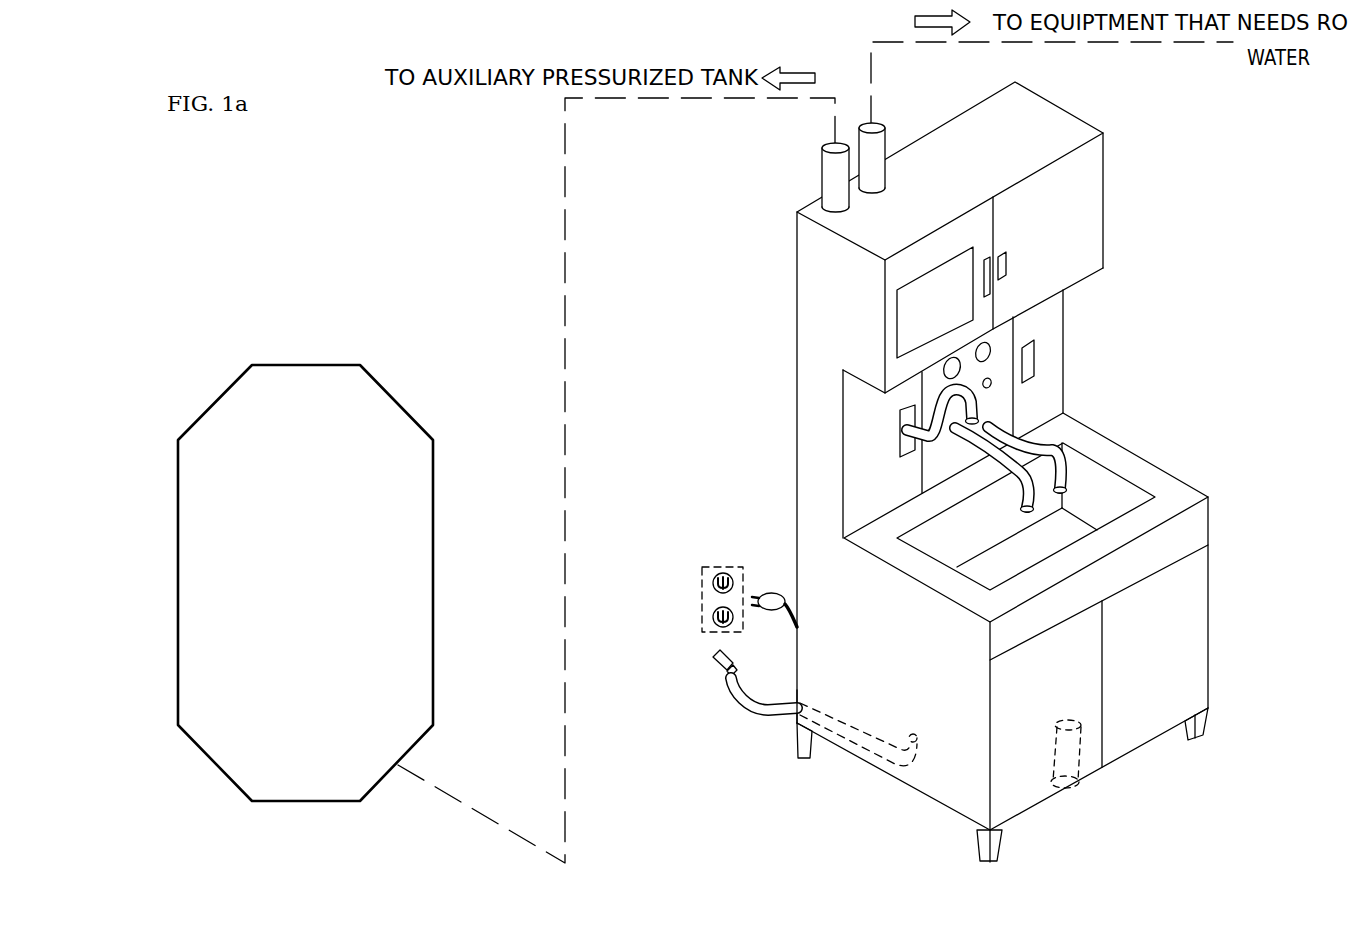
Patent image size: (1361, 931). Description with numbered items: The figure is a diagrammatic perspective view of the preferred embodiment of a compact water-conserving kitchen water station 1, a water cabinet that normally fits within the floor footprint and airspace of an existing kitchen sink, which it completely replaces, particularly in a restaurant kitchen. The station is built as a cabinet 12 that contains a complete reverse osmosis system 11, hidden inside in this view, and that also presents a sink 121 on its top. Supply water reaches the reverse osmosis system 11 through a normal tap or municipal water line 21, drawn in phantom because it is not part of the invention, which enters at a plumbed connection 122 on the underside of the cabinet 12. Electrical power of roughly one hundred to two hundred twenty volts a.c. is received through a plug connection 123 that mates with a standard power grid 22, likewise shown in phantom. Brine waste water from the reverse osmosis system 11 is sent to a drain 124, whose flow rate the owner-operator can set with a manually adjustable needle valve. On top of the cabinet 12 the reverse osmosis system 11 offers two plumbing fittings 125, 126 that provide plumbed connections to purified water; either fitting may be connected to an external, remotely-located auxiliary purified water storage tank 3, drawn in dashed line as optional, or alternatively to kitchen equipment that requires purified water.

The water station 1 is at (953, 472).
The auxiliary purified water storage tank 3 is at (297, 590).
The reverse osmosis system 11 is at (985, 637).
The cabinet 12 is at (1178, 645).
The water line 21 is at (760, 697).
The power grid 22 is at (716, 563).
The sink 121 is at (1096, 488).
The plumbed connection 122 is at (907, 733).
The plug connection 123 is at (778, 586).
The drain 124 is at (1058, 736).
The plumbing fitting 125 is at (825, 172).
The plumbing fitting 126 is at (884, 148).